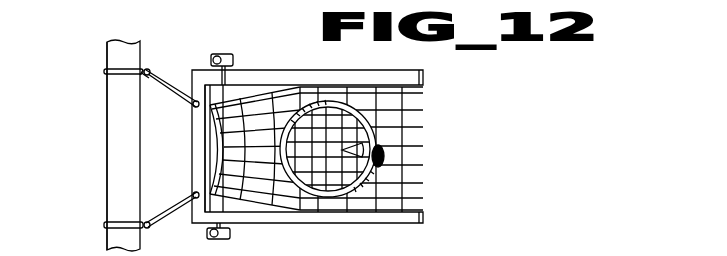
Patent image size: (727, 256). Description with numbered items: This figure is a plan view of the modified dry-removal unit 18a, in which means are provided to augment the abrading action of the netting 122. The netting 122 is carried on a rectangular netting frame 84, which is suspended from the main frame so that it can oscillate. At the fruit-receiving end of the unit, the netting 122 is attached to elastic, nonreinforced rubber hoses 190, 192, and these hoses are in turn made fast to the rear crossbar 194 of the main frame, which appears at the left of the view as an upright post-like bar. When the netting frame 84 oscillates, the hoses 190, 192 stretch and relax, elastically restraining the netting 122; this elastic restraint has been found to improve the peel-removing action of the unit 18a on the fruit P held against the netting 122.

The modified dry-removal unit 18a is at (494, 103).
The rectangular frame 84 is at (418, 220).
The netting 122 is at (407, 131).
The puck P is at (384, 155).
The elastic, nonreinforced rubber hose 190 is at (169, 72).
The elastic, nonreinforced rubber hose 192 is at (162, 218).
The rear crossbar 194 is at (117, 145).